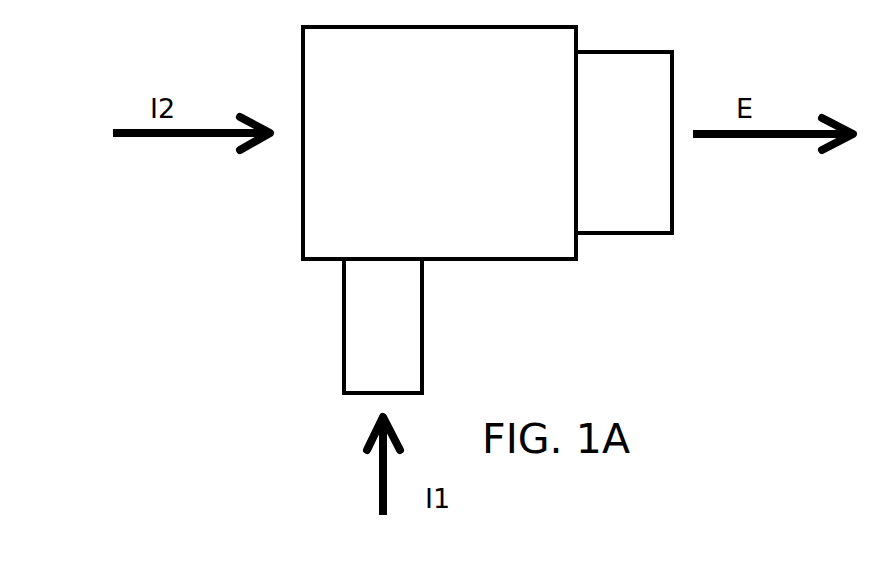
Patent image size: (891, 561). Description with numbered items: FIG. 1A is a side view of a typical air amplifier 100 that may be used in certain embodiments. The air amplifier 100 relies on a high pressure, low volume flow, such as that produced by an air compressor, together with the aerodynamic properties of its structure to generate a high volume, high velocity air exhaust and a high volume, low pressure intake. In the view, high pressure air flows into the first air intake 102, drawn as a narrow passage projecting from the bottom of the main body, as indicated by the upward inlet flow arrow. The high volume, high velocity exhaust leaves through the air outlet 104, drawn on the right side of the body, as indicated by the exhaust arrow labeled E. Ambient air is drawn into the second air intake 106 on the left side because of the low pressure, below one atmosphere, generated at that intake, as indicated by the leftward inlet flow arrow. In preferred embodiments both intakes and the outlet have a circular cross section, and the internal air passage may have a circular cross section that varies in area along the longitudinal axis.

The air amplifier 100 is at (633, 337).
The first air intake 102 is at (342, 373).
The air outlet 104 is at (668, 203).
The second air intake 106 is at (300, 215).